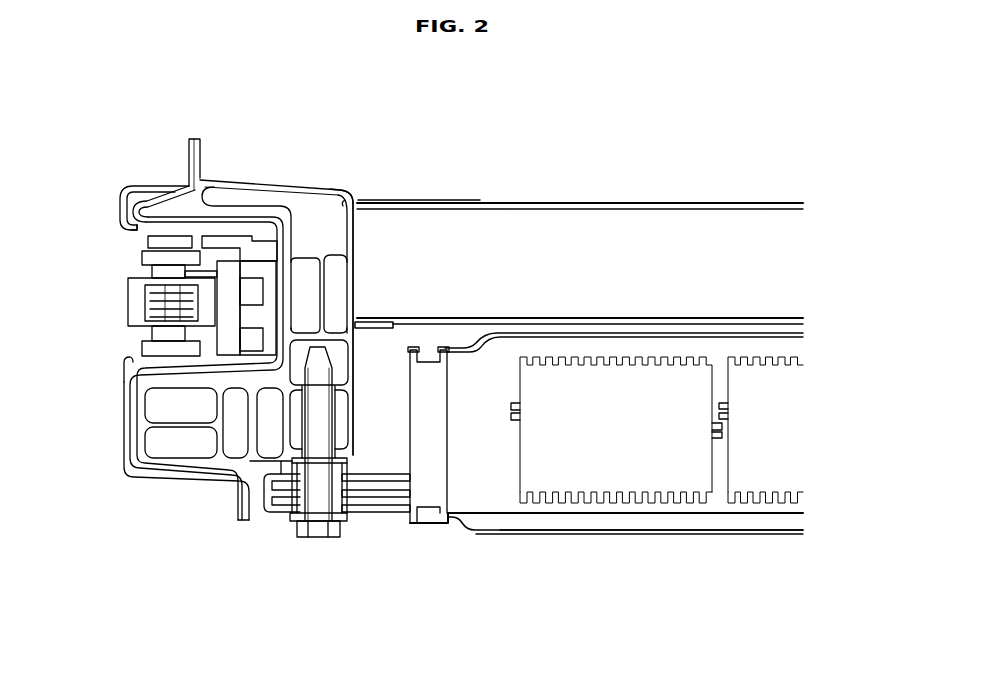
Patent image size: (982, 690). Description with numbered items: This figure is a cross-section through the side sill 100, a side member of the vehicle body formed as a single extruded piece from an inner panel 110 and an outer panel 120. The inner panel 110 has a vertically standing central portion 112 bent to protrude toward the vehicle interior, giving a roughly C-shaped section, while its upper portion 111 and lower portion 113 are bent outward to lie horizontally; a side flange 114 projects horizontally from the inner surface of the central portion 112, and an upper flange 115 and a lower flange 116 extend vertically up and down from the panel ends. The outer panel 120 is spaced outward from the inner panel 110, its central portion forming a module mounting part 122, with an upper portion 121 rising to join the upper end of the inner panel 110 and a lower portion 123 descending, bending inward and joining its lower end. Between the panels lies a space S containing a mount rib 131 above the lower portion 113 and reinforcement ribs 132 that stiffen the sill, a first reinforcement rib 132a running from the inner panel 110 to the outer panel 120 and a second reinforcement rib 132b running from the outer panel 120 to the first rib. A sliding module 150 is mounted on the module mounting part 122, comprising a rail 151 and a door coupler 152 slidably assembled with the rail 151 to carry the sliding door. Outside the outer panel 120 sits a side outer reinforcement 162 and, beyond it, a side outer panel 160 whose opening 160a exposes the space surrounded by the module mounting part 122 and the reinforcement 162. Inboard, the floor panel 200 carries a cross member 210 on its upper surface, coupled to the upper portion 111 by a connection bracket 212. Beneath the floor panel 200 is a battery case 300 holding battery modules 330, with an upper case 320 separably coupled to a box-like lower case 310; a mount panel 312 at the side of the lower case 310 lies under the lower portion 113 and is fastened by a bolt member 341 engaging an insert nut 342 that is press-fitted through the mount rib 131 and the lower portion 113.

The side sill 100 is at (345, 103).
The inner panel 110 is at (284, 175).
The upper portion 111 is at (338, 191).
The central portion 112 is at (354, 240).
The lower portion 113 is at (298, 402).
The side flange 114 is at (372, 330).
The upper flange 115 is at (205, 150).
The lower flange 116 is at (248, 520).
The outer panel 120 is at (234, 195).
The upper portion 121 is at (188, 186).
The module mounting part 122 is at (280, 322).
The lower portion 123 is at (147, 423).
The mount rib 131 is at (303, 400).
The reinforcement ribs 132 is at (428, 257).
The first reinforcement rib 132a is at (369, 322).
The second reinforcement rib 132b is at (320, 290).
The sliding module 150 is at (70, 290).
The rail 151 is at (270, 316).
The door coupler 152 is at (128, 298).
The side outer panel 160 is at (112, 187).
The opening 160a is at (133, 232).
The side outer reinforcement 162 is at (125, 476).
The floor panel 200 is at (731, 318).
The cross member 210 is at (627, 204).
The connection bracket 212 is at (437, 202).
The battery case 300 is at (462, 578).
The lower case 310 is at (534, 520).
The mount panel 312 is at (383, 513).
The upper case 320 is at (497, 334).
The battery modules 330 is at (800, 358).
The bolt member 341 is at (302, 531).
The insert nut 342 is at (333, 425).
The space S is at (345, 200).